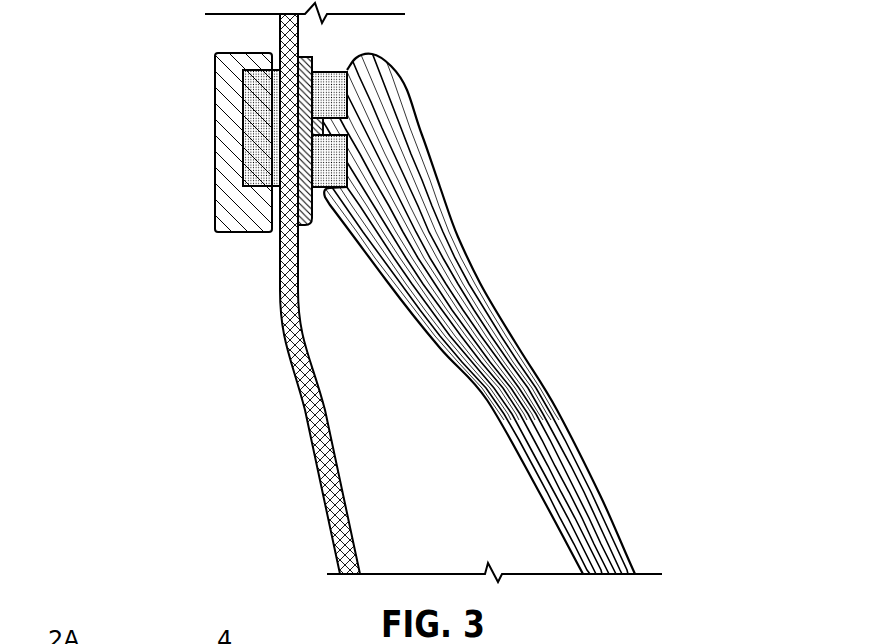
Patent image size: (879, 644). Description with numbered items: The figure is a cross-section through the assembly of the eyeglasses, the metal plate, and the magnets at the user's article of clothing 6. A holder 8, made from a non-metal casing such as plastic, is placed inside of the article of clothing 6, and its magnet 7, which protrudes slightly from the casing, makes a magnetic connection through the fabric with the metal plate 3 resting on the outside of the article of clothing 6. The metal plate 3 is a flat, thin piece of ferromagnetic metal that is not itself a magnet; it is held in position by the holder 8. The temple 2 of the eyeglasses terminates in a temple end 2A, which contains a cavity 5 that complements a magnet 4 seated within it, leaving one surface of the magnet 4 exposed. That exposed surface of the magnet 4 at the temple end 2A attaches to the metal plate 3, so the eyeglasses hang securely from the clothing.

The temple 2 is at (563, 425).
The temple end 2A is at (427, 203).
The metal plate 3 is at (312, 192).
The magnet 4 is at (343, 146).
The cavity 5 is at (338, 88).
The article of clothing 6 is at (282, 313).
The magnet 7 is at (253, 93).
The holder 8 is at (223, 203).